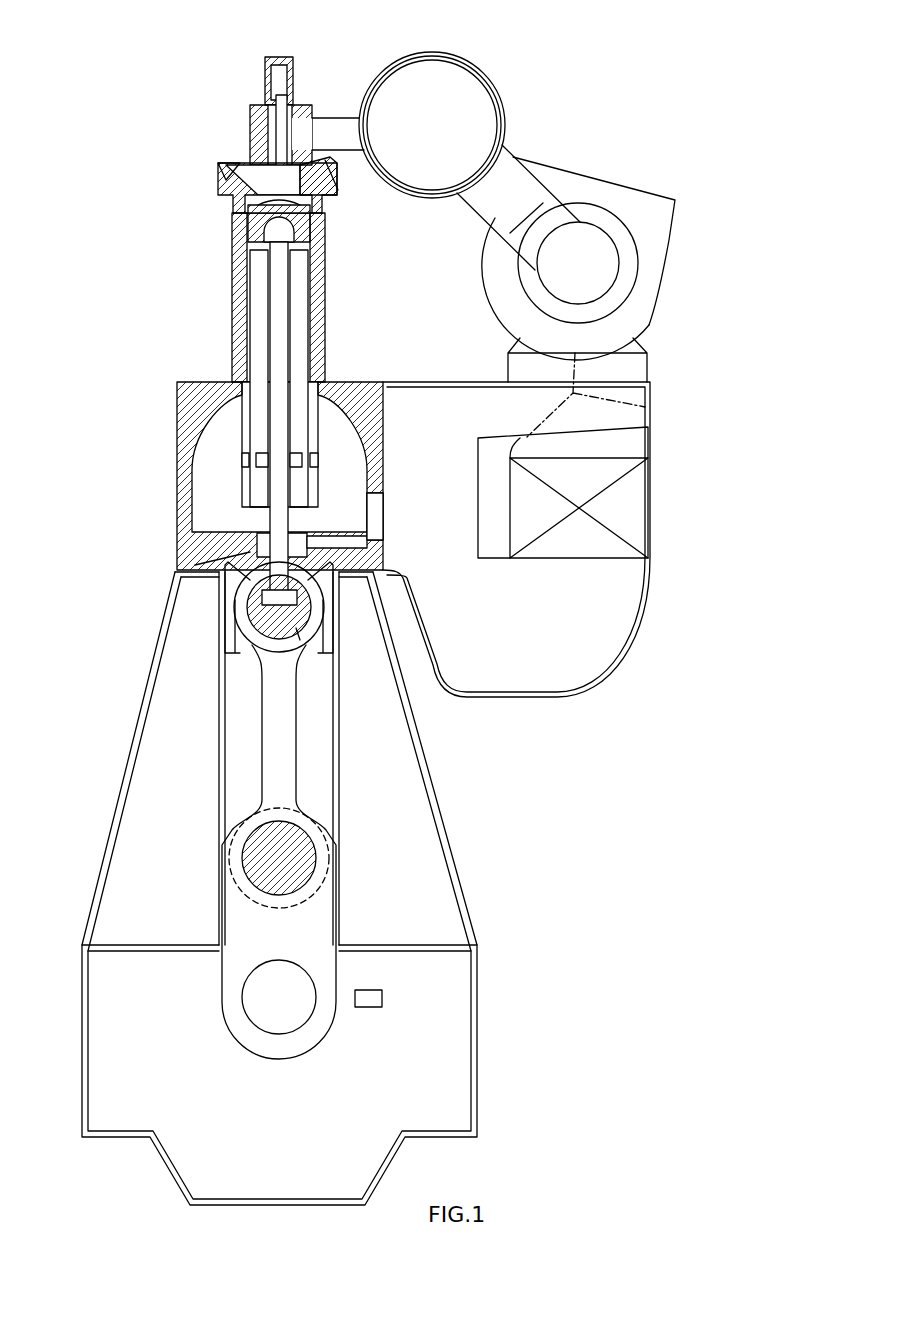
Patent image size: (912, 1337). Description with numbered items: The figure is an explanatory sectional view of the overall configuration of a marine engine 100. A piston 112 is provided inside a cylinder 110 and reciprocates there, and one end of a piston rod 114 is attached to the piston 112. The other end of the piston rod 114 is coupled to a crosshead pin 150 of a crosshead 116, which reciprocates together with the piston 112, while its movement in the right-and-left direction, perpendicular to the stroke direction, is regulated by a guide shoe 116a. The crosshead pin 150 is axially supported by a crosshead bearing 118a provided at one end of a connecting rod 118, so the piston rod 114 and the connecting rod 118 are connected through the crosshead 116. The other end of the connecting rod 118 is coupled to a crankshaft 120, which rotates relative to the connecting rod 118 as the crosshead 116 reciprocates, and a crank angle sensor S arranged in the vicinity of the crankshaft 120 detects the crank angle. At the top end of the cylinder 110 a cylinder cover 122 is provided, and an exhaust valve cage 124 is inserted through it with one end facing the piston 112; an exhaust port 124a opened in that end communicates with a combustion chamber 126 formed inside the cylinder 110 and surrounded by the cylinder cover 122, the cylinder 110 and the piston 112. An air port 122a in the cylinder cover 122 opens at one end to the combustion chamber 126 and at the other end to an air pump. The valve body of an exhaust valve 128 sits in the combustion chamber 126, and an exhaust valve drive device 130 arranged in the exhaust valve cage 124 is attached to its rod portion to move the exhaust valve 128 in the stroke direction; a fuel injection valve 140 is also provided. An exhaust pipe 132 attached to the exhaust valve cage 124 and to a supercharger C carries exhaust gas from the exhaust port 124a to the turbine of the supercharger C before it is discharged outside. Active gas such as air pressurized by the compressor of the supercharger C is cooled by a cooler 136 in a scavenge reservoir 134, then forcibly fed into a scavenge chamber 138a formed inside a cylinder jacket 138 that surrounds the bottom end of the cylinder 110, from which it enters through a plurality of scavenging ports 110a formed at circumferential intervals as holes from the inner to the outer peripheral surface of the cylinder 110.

The marine engine 100 is at (100, 54).
The exhaust valve drive device 130 is at (278, 82).
The exhaust valve cage 124 is at (260, 130).
The exhaust port 124a is at (318, 205).
The cylinder cover 122 is at (222, 180).
The air port 122a is at (221, 166).
The fuel injection valve 140 is at (330, 160).
The exhaust valve 128 is at (312, 222).
The combustion chamber 126 is at (310, 245).
The cylinder 110 is at (235, 335).
The piston 112 is at (250, 262).
The piston rod 114 is at (268, 290).
The scavenging ports 110a is at (313, 466).
The cylinder jacket 138 is at (178, 397).
The scavenge chamber 138a is at (360, 531).
The scavenge reservoir 134 is at (548, 619).
The cooler 136 is at (650, 518).
The supercharger C is at (607, 180).
The exhaust pipe 132 is at (505, 110).
The crankshaft 120 is at (215, 985).
The crank angle sensor S is at (384, 998).
The crosshead pin 150 is at (226, 566).
The connecting rod 118 is at (258, 722).
The crosshead 116 is at (250, 612).
The guide shoe 116a is at (262, 597).
The crosshead bearing 118a is at (296, 628).